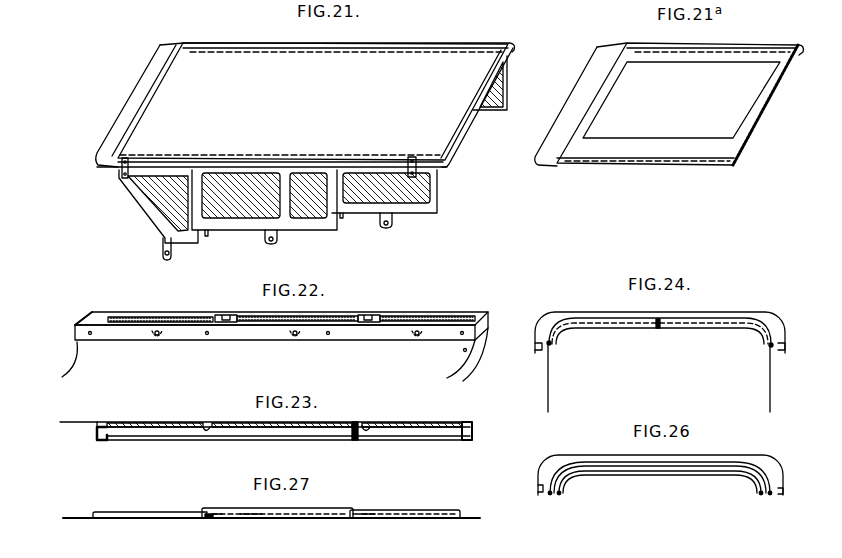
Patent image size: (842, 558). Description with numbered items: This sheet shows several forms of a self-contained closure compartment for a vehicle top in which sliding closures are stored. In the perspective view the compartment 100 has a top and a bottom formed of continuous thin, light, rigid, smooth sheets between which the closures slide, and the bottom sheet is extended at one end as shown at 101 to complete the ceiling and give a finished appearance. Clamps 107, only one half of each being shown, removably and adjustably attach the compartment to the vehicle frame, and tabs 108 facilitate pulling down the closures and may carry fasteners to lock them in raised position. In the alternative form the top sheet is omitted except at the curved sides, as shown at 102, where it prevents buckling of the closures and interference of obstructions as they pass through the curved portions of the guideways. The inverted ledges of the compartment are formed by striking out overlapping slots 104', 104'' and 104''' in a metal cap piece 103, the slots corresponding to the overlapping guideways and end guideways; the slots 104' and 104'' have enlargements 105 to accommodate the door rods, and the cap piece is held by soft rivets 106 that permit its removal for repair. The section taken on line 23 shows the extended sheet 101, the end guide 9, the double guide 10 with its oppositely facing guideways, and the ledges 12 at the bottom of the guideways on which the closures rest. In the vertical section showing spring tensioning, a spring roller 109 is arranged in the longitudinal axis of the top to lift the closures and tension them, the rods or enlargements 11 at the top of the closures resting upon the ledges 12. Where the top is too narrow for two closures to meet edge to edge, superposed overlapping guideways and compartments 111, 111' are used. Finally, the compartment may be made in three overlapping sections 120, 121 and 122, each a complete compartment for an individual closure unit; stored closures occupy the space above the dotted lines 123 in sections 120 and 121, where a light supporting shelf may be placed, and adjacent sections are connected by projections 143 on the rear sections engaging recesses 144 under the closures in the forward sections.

In FIG. 21, the compartment 100 is at (313, 101).
In FIG. 21, the extended bottom sheet 101 is at (140, 105).
In FIG. 23, the extended bottom sheet 101 is at (73, 423).
In FIG. 21A, the open top 102 is at (669, 104).
In FIG. 22, the metal cap piece 103 is at (78, 324).
In FIG. 22, the slot 104' is at (427, 343).
In FIG. 23, the slot 104' is at (416, 446).
In FIG. 22, the slot 104'' is at (311, 346).
In FIG. 23, the slot 104'' is at (282, 444).
In FIG. 22, the slot 104''' is at (168, 346).
In FIG. 23, the slot 104''' is at (155, 445).
In FIG. 22, the enlargement 105 is at (230, 322).
In FIG. 23, the enlargement 105 is at (220, 430).
In FIG. 22, the soft rivet 106 is at (90, 335).
In FIG. 21, the clamp 107 is at (127, 158).
In FIG. 21, the tab 108 is at (278, 242).
In FIG. 22, the tab 108 is at (302, 335).
In FIG. 24, the spring roller 109 is at (657, 330).
In FIG. 23, the guide 10 is at (355, 440).
In FIG. 24, the rod 11 is at (778, 344).
In FIG. 22, the ledge 12 is at (138, 325).
In FIG. 23, the ledge 12 is at (147, 432).
In FIG. 24, the ledge 12 is at (767, 346).
In FIG. 22, the section line 23 is at (75, 344).
In FIG. 23, the guide 9 is at (102, 440).
In FIG. 26, the overlapping guideway 111 is at (660, 480).
In FIG. 26, the overlapping guideway 111' is at (660, 483).
In FIG. 27, the forward section 120 is at (405, 509).
In FIG. 27, the middle section 121 is at (277, 509).
In FIG. 27, the rear section 122 is at (150, 508).
In FIG. 27, the dotted line 123 is at (260, 518).
In FIG. 27, the projection 143 is at (213, 518).
In FIG. 27, the recess 144 is at (232, 520).